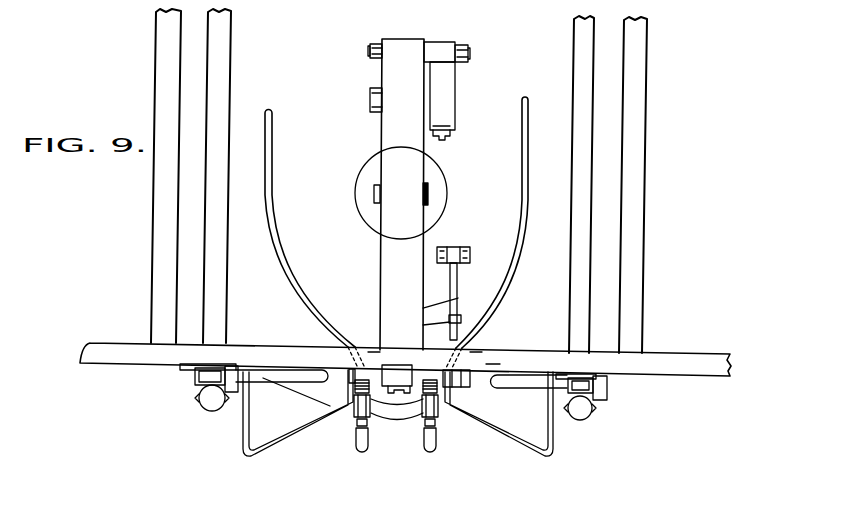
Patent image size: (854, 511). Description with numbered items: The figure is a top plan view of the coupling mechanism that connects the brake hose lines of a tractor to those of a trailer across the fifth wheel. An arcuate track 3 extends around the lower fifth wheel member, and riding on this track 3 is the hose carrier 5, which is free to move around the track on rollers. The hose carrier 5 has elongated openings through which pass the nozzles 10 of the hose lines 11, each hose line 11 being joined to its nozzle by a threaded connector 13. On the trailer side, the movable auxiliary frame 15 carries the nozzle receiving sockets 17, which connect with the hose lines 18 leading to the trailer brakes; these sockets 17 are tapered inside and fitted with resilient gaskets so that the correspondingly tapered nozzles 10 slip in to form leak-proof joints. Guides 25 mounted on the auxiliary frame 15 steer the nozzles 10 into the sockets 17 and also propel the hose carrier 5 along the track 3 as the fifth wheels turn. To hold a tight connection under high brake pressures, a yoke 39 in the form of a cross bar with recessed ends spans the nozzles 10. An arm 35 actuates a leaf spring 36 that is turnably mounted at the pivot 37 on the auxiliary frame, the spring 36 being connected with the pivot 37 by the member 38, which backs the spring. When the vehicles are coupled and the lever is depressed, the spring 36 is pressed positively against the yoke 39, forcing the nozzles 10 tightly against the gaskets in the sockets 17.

The arcuate track 3 is at (480, 392).
The hose carrier 5 is at (352, 412).
The nozzles 10 is at (427, 416).
The hose lines 11 is at (355, 445).
The threaded connector 13 is at (353, 419).
The movable auxiliary frame 15 is at (660, 356).
The nozzle receiving sockets 17 is at (433, 307).
The hose lines 18 is at (278, 252).
The guides 25 is at (242, 440).
The arm 35 is at (495, 365).
The leaf spring 36 is at (372, 352).
The pivot 37 is at (477, 350).
The member 38 is at (398, 370).
The yoke 39 is at (355, 347).